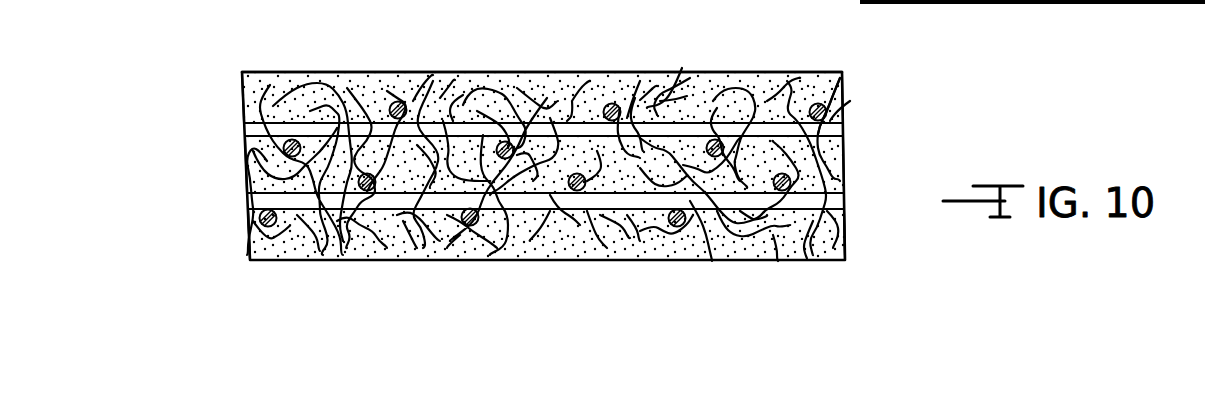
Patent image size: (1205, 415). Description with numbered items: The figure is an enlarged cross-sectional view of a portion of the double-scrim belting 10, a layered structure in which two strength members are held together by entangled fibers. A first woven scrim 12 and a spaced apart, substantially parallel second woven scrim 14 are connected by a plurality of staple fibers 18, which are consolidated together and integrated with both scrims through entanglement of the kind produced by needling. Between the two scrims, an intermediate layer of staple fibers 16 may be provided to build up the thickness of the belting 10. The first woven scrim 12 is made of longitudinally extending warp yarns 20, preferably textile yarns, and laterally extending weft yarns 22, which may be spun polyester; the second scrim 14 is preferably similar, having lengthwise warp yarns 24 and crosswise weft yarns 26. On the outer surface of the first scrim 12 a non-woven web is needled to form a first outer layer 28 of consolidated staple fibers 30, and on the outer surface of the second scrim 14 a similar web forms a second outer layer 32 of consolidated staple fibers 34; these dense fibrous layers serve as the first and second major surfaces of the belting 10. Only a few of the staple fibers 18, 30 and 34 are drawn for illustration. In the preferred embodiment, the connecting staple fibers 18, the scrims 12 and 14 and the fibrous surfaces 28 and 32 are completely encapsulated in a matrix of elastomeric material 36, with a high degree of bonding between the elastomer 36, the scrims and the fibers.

The double-scrim belting 10 is at (594, 60).
The first woven scrim 12 is at (241, 124).
The second woven scrim 14 is at (244, 201).
The intermediate layer of staple fibers 16 is at (243, 168).
The staple fibers 18 is at (848, 150).
The warp yarns 20 is at (846, 134).
The weft yarns 22 is at (400, 104).
The warp yarns 24 is at (846, 202).
The weft yarns 26 is at (835, 177).
The first outer layer 28 is at (241, 90).
The consolidated staple fibers 30 is at (665, 95).
The second outer layer 32 is at (241, 234).
The consolidated staple fibers 34 is at (775, 242).
The elastomeric material 36 is at (820, 80).